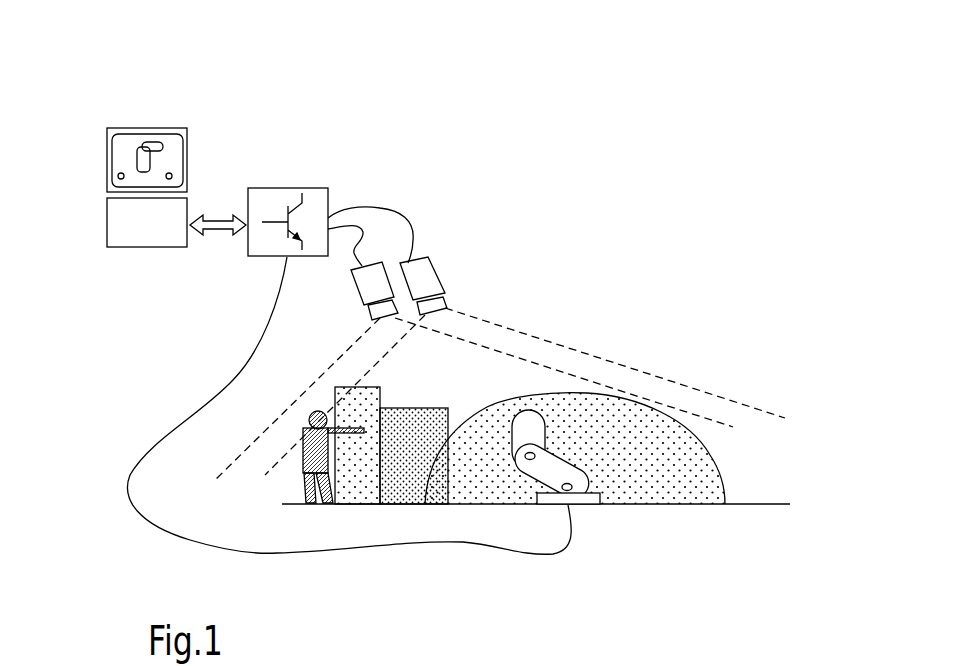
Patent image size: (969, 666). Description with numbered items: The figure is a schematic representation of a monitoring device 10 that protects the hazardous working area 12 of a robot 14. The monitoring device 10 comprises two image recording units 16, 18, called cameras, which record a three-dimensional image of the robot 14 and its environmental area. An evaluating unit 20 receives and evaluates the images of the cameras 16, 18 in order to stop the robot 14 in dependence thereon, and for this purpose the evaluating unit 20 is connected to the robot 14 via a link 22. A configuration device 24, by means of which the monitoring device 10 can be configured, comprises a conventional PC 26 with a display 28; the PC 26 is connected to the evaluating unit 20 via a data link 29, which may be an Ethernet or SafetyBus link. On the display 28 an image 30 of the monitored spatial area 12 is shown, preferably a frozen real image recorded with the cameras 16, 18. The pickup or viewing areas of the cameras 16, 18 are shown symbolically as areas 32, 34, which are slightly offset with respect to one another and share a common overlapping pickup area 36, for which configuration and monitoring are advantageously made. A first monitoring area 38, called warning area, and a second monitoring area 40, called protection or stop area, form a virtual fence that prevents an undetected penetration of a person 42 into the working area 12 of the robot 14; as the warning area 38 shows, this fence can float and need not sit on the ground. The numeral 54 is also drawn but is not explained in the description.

The monitoring device 10 is at (645, 172).
The hazardous working area 12 is at (710, 480).
The robot 14 is at (593, 504).
The image recording unit 16 is at (362, 288).
The image recording unit 18 is at (445, 272).
The evaluating unit 20 is at (289, 188).
The link 22 is at (553, 555).
The configuration device 24 is at (87, 158).
The PC 26 is at (133, 248).
The display 28 is at (145, 128).
The data link 29 is at (218, 248).
The image 30 is at (125, 146).
The pickup area 32 is at (512, 356).
The pickup area 34 is at (718, 397).
The common pickup area 36 is at (462, 381).
The first monitoring area 38 is at (355, 468).
The second monitoring area 40 is at (410, 482).
The person 42 is at (307, 472).
The element 54 is at (702, 665).